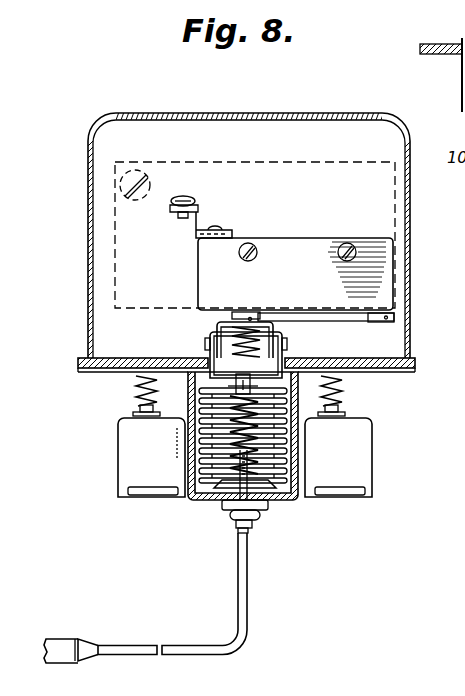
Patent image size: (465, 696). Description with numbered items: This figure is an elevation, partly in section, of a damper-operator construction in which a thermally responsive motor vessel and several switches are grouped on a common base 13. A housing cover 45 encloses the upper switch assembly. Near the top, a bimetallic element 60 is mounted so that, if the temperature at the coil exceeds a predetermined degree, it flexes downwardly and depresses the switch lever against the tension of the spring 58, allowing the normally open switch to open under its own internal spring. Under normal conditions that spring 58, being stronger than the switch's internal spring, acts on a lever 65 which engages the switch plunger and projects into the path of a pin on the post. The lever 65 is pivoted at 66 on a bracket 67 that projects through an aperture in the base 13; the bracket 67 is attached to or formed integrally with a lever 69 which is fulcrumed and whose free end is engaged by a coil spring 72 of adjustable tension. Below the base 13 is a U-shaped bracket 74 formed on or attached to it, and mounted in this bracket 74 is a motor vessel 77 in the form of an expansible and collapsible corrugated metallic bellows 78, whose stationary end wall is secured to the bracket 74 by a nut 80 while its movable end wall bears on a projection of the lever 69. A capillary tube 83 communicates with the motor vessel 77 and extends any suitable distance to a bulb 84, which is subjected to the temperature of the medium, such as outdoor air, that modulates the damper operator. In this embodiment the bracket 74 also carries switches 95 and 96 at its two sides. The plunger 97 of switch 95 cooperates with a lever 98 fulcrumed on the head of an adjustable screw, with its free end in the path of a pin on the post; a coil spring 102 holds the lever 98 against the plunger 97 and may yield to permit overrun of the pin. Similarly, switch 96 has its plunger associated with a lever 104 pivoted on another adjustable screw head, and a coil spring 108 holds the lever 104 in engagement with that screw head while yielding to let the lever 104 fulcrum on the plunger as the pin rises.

The base 13 is at (390, 360).
The housing cover 45 is at (408, 272).
The spring 58 is at (216, 327).
The bimetallic element 60 is at (322, 318).
The lever 65 is at (232, 312).
The pivot 66 is at (262, 343).
The bracket 67 is at (284, 362).
The lever 69 is at (276, 392).
The coil spring 72 is at (296, 458).
The U-shaped bracket 74 is at (298, 498).
The motor vessel 77 is at (214, 490).
The bellows 78 is at (196, 452).
The nut 80 is at (258, 514).
The capillary tube 83 is at (247, 598).
The bulb 84 is at (74, 640).
The switch 95 is at (128, 462).
The switch 96 is at (352, 488).
The plunger 97 is at (145, 418).
The lever 98 is at (138, 410).
The coil spring 102 is at (138, 389).
The lever 104 is at (346, 412).
The coil spring 108 is at (343, 393).